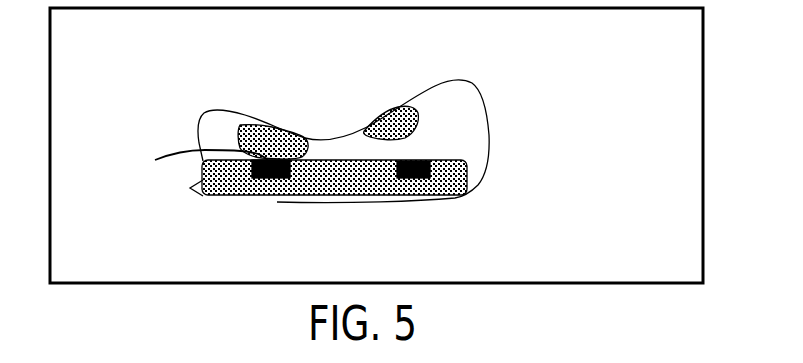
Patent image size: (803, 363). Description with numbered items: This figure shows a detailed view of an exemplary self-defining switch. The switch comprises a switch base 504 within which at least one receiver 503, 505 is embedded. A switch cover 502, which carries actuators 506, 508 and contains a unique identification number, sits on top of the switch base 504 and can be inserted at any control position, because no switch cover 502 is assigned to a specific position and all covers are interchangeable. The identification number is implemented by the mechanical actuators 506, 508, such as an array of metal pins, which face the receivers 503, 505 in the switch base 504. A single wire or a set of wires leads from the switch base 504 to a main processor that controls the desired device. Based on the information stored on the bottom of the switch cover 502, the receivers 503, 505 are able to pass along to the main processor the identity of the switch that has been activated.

The switch cover 502 is at (467, 108).
The receiver 503 is at (420, 161).
The switch base 504 is at (457, 196).
The receiver 505 is at (188, 160).
The actuator 506 is at (272, 127).
The actuator 508 is at (386, 122).